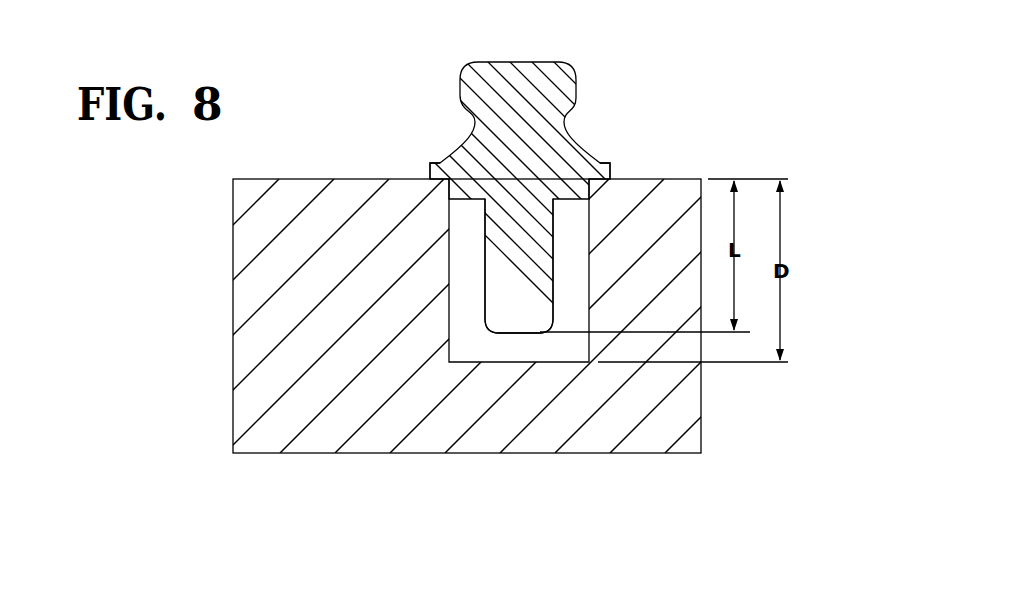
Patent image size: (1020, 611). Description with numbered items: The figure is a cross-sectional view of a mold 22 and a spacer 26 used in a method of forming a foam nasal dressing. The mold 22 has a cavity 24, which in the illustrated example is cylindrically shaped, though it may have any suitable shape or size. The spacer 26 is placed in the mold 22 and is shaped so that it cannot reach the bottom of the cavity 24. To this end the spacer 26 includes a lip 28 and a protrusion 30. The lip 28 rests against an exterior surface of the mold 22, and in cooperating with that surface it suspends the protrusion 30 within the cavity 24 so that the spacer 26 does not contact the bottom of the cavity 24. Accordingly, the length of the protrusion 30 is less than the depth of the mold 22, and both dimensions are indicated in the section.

The mold 22 is at (210, 308).
The cavity 24 is at (569, 270).
The spacer 26 is at (585, 90).
The lip 28 is at (432, 182).
The protrusion 30 is at (507, 253).